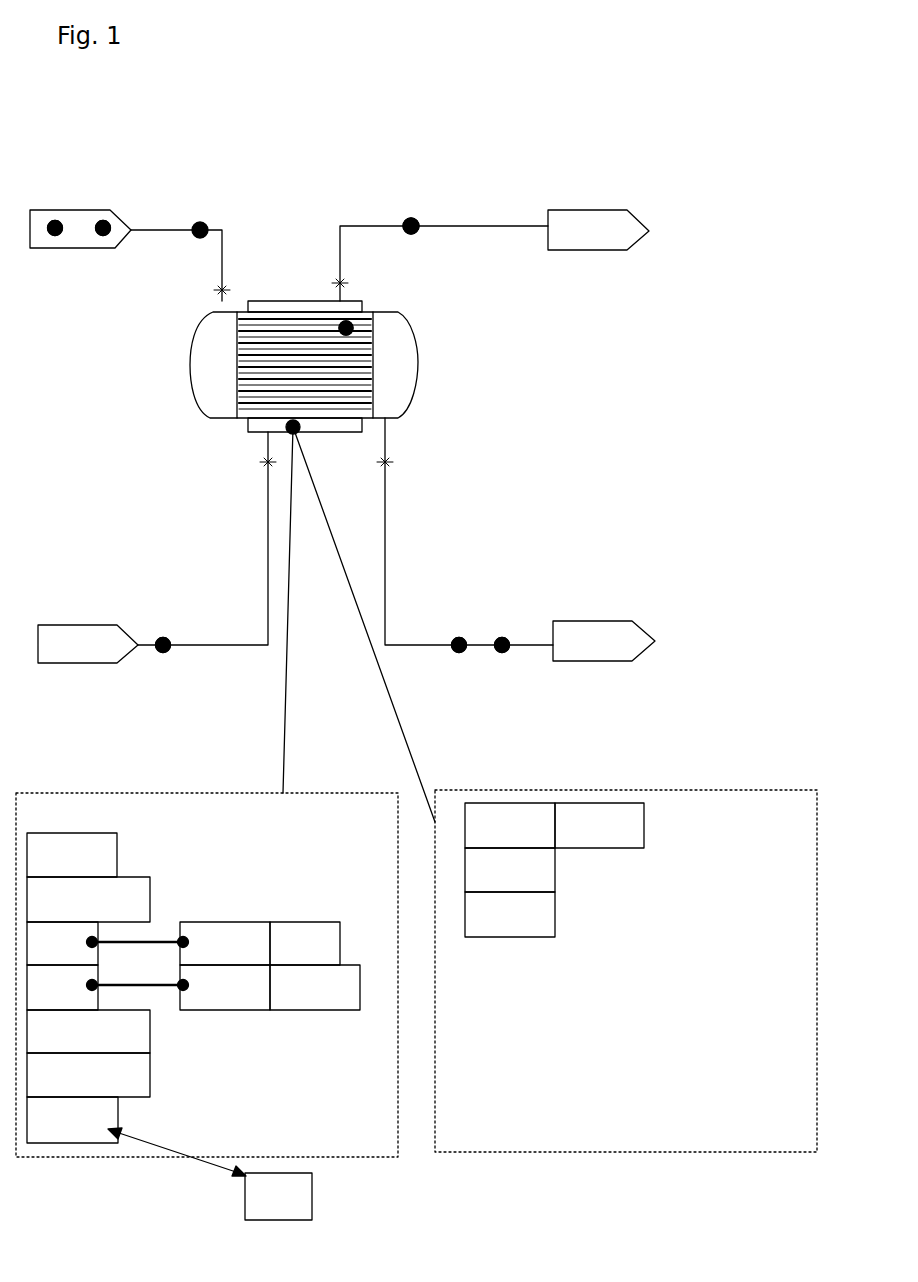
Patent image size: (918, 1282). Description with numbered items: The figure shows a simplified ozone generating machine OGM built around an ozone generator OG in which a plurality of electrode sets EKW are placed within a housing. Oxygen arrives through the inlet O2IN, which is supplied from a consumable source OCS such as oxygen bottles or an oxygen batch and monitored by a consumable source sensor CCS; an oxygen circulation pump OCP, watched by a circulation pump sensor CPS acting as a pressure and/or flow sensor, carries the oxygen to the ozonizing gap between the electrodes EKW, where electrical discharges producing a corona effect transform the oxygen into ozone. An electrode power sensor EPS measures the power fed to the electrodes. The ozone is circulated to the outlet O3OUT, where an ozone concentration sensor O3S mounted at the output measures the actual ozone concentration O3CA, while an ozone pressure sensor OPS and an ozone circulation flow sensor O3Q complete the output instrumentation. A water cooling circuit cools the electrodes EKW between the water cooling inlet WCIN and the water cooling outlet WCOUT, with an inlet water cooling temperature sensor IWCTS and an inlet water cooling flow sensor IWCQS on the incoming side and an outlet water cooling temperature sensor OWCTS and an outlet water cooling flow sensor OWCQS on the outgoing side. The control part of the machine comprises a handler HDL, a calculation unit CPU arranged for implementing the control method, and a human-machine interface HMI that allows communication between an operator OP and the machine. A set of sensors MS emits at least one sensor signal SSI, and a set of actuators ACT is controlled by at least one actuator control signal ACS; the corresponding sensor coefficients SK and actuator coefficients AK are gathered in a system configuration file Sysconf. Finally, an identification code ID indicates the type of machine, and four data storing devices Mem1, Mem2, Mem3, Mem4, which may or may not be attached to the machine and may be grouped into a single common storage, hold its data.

The oxygen inlet O2IN is at (72, 210).
The consumable source OCS is at (106, 224).
The consumable source sensor CCS is at (147, 196).
The oxygen circulation pump OCP is at (58, 235).
The circulation pump sensor CPS is at (204, 224).
The ozone generator OG is at (262, 301).
The electrode power sensor EPS is at (350, 323).
The electrodes EKW is at (398, 291).
The outlet water cooling temperature sensor OWCTS is at (414, 220).
The outlet water cooling flow sensor OWCQS is at (442, 197).
The water cooling outlet WCOUT is at (600, 210).
The ozone generating machine OGM is at (560, 118).
The water cooling inlet WCIN is at (92, 625).
The inlet water cooling temperature sensor IWCTS is at (166, 640).
The inlet water cooling flow sensor IWCQS is at (187, 604).
The ozone concentration sensor O3S is at (459, 638).
The actual ozone concentration O3CA is at (499, 590).
The ozone pressure sensor OPS is at (504, 652).
The ozone circulation flow sensor O3Q is at (537, 680).
The ozone outlet O3OUT is at (632, 661).
The data storing device Mem4 is at (72, 855).
The system configuration file Sysconf is at (88, 899).
The sensor coefficients SK is at (62, 943).
The actuator coefficients AK is at (62, 987).
The set of sensors MS is at (224, 943).
The sensor signal SSI is at (305, 943).
The set of actuators ACT is at (224, 987).
The actuator control signal ACS is at (315, 987).
The handler HDL is at (88, 1031).
The calculation unit CPU is at (88, 1075).
The human-machine interface HMI is at (72, 1120).
The operator OP is at (210, 1174).
The data storing device Mem1 is at (510, 825).
The identification code ID is at (599, 825).
The data storing device Mem2 is at (510, 870).
The data storing device Mem3 is at (510, 914).